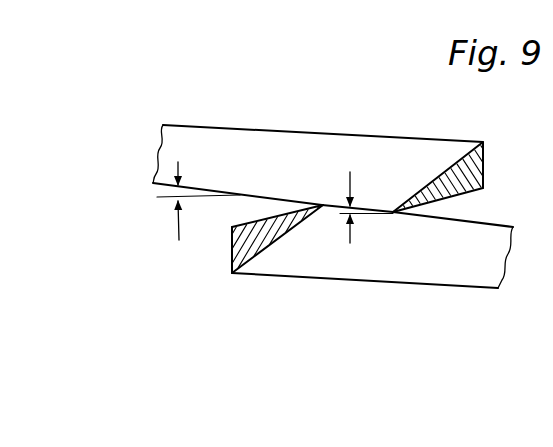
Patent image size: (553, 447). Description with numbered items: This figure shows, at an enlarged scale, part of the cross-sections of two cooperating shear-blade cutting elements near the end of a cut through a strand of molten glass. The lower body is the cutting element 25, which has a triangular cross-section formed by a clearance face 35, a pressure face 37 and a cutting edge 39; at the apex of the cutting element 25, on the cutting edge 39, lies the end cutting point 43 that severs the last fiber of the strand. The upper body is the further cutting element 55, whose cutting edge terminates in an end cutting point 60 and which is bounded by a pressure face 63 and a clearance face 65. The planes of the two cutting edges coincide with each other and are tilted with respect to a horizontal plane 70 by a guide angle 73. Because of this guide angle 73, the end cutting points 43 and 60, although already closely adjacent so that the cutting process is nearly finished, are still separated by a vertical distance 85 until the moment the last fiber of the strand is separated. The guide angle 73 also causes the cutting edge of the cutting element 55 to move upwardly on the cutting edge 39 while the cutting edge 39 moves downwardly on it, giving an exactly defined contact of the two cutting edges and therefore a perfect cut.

The cutting element 25 is at (447, 288).
The clearance face 35 is at (241, 222).
The pressure face 37 is at (260, 251).
The cutting edge 39 is at (483, 222).
The end cutting point 43 is at (322, 204).
The cutting element 55 is at (456, 137).
The end cutting point 60 is at (393, 214).
The pressure face 63 is at (423, 189).
The clearance face 65 is at (475, 191).
The horizontal plane 70 is at (158, 198).
The guide angle 73 is at (153, 191).
The vertical distance 85 is at (371, 207).